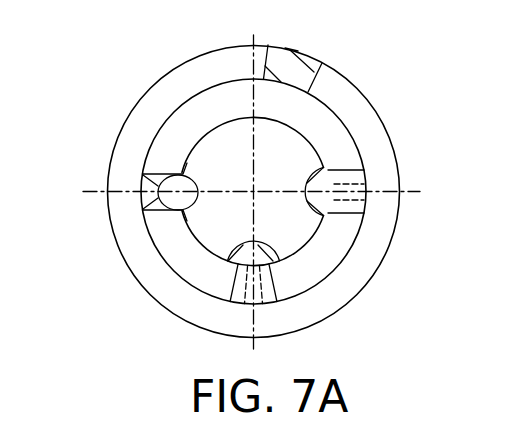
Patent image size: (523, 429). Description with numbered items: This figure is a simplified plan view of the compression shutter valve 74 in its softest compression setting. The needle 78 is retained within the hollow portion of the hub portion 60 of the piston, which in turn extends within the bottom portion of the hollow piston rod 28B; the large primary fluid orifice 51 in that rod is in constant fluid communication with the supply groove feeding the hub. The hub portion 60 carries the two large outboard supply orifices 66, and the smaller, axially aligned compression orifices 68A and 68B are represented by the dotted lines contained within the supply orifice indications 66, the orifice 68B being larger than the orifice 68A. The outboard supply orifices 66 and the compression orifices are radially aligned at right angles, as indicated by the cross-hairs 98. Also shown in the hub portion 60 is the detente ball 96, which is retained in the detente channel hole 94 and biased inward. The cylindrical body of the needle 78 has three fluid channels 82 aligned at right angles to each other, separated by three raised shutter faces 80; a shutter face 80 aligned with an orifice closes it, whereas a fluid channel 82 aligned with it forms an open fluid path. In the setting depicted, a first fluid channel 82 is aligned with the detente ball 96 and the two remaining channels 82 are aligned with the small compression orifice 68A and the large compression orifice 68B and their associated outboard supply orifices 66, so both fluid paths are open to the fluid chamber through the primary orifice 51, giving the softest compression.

The bottom portion of the hollow piston rod 28B is at (363, 113).
The primary fluid orifice 51 is at (303, 52).
The hub portion 60 is at (182, 134).
The outboard supply orifice 66 is at (350, 168).
The compression orifice 68A is at (366, 197).
The compression orifice 68B is at (243, 302).
The compression shutter valve 74 is at (408, 73).
The needle 78 is at (245, 161).
The shutter faces 80 is at (235, 117).
The fluid channels 82 is at (150, 180).
The detente channel hole 94 is at (155, 186).
The detente ball 96 is at (140, 209).
The cross-hairs 98 is at (254, 190).